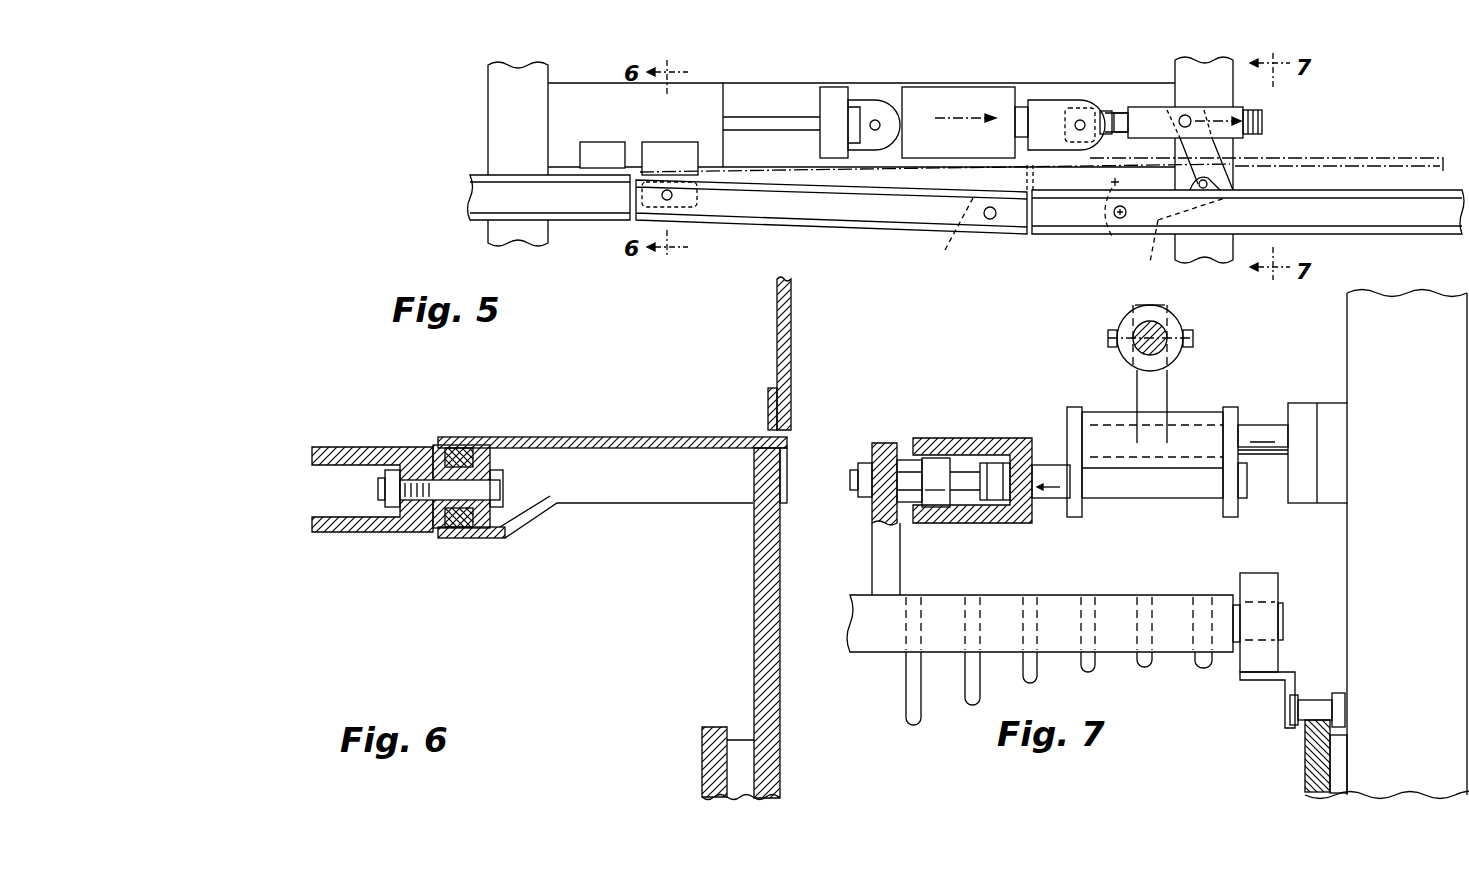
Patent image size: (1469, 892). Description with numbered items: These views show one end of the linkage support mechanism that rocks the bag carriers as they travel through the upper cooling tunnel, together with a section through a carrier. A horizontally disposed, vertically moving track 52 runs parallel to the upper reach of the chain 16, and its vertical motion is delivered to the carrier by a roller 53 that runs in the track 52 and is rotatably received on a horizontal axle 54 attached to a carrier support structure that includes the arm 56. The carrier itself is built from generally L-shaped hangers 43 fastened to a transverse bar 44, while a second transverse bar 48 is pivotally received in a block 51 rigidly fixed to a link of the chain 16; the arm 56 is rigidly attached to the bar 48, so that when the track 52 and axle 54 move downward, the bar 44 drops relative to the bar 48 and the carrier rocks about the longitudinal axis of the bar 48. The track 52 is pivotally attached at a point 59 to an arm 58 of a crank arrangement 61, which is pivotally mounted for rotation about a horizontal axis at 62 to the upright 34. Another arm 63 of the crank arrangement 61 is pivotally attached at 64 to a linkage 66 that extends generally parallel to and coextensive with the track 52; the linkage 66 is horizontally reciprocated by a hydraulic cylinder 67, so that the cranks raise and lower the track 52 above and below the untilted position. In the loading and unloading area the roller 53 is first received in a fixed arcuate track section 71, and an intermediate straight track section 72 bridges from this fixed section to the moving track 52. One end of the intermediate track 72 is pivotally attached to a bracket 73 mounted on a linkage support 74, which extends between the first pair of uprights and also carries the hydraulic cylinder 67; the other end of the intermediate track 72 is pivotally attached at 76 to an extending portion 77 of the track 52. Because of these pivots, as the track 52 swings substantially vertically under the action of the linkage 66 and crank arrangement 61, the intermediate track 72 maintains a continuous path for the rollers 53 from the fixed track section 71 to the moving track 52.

In FIG. 7, the chain 16 is at (1315, 695).
In FIG. 5, the upright 34 is at (1222, 82).
In FIG. 7, the upright 34 is at (1362, 350).
In FIG. 7, the hanger 43 is at (921, 715).
In FIG. 7, the transverse bar 44 is at (1114, 606).
In FIG. 7, the second transverse bar 48 is at (1285, 612).
In FIG. 7, the block 51 is at (1280, 560).
In FIG. 5, the track 52 is at (1375, 232).
In FIG. 7, the track 52 is at (935, 438).
In FIG. 7, the roller 53 is at (936, 507).
In FIG. 7, the horizontal axle 54 is at (908, 460).
In FIG. 7, the arm 56 is at (882, 443).
In FIG. 5, the arm 58 is at (1182, 245).
In FIG. 7, the arm 58 is at (1228, 508).
In FIG. 5, the pivot point 59 is at (1120, 220).
In FIG. 7, the pivot point 59 is at (1058, 498).
In FIG. 7, the crank arrangement 61 is at (1183, 396).
In FIG. 5, the pivot 62 is at (1223, 180).
In FIG. 7, the pivot 62 is at (1268, 425).
In FIG. 5, the arm 63 is at (1222, 150).
In FIG. 5, the pivot 64 is at (1185, 114).
In FIG. 5, the linkage 66 is at (1143, 110).
In FIG. 7, the linkage 66 is at (1185, 320).
In FIG. 5, the hydraulic cylinder 67 is at (967, 95).
In FIG. 5, the fixed arcuate track section 71 is at (600, 220).
In FIG. 5, the intermediate straight track section 72 is at (793, 228).
In FIG. 6, the intermediate straight track section 72 is at (372, 447).
In FIG. 5, the bracket 73 is at (676, 142).
In FIG. 6, the bracket 73 is at (768, 410).
In FIG. 5, the linkage support 74 is at (723, 83).
In FIG. 6, the linkage support 74 is at (793, 332).
In FIG. 5, the pivot 76 is at (990, 219).
In FIG. 5, the extending portion 77 is at (953, 239).